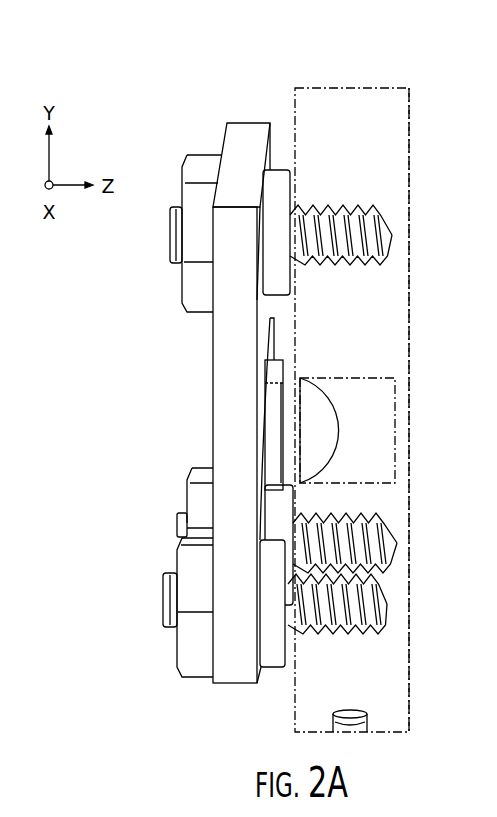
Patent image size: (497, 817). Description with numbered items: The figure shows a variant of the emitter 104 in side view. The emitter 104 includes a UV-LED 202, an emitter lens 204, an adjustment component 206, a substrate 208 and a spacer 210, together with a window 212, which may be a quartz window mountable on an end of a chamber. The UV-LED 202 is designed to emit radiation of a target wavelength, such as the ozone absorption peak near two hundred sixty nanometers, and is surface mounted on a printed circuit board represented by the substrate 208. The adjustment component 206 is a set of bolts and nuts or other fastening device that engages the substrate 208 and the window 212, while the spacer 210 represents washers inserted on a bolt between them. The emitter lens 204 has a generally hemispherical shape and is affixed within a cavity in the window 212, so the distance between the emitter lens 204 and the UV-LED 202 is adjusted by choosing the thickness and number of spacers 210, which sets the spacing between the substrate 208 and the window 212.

The emitter 104 is at (318, 72).
The UV-LED 202 is at (272, 407).
The emitter lens 204 is at (335, 445).
The adjustment component 206 is at (197, 240).
The substrate 208 is at (213, 382).
The spacer 210 is at (283, 177).
The window 212 is at (398, 157).